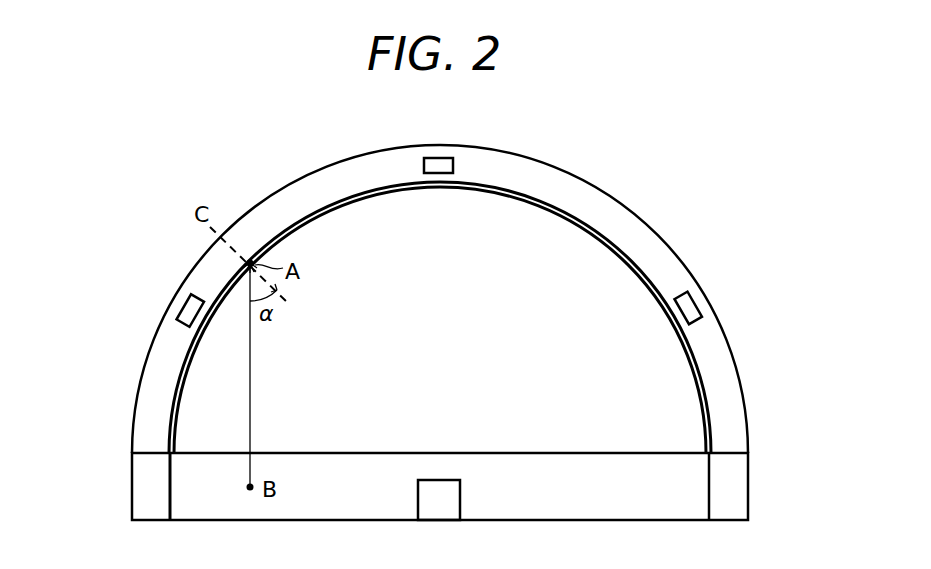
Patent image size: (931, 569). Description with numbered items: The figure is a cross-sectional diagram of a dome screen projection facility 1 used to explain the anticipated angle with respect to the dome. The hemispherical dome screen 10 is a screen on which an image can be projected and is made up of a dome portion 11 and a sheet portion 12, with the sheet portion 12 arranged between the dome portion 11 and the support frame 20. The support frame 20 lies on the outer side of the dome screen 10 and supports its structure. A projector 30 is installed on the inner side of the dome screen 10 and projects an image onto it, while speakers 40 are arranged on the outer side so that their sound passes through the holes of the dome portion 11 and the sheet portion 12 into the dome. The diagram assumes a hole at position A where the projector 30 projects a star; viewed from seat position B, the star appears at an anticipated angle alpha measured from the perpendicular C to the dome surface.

The dome screen projection facility 1 is at (116, 130).
The dome screen 10 is at (718, 155).
The dome portion 11 is at (598, 231).
The sheet portion 12 is at (622, 248).
The support frame 20 is at (640, 267).
The projector 30 is at (438, 500).
The speaker 40 is at (690, 310).